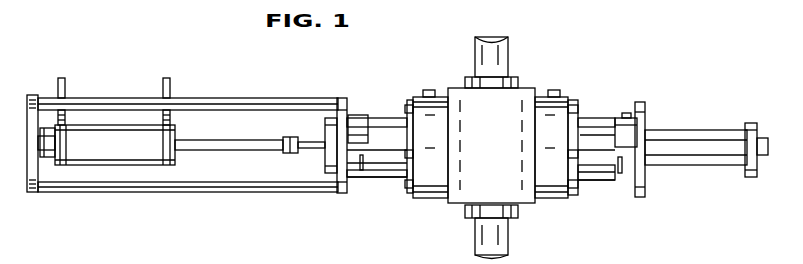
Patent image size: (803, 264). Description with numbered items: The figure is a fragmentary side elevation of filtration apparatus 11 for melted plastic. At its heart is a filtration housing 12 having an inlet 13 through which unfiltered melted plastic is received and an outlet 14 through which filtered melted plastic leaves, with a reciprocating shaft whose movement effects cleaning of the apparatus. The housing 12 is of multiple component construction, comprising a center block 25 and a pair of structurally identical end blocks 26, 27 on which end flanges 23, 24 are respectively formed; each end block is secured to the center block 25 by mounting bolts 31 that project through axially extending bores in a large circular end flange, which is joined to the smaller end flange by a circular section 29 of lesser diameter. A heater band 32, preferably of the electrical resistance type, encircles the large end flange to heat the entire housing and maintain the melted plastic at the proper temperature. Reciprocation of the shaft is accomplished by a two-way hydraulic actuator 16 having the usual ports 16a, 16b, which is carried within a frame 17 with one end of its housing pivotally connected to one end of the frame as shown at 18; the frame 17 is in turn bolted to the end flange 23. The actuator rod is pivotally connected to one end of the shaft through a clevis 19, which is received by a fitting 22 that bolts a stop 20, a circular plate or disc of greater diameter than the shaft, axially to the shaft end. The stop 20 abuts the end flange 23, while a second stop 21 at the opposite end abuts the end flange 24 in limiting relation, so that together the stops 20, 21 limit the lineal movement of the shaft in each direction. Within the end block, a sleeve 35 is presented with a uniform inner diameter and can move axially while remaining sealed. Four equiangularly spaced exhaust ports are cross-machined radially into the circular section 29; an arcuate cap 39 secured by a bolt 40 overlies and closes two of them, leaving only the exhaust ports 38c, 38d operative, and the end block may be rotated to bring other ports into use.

The apparatus 11 is at (624, 56).
The filtration housing 12 is at (537, 86).
The inlet 13 is at (475, 241).
The outlet 14 is at (505, 45).
The two-way hydraulic actuator 16 is at (103, 166).
The port 16a is at (63, 84).
The port 16b is at (170, 84).
The frame 17 is at (187, 193).
The pivotal connection 18 is at (50, 158).
The clevis 19 is at (295, 137).
The stop 20 is at (328, 174).
The stop 21 is at (749, 180).
The fitting 22 is at (297, 158).
The end flange 23 is at (344, 98).
The end flange 24 is at (646, 102).
The center block 25 is at (455, 95).
The end block 26 is at (385, 118).
The end block 27 is at (593, 118).
The circular section 29 is at (392, 178).
The mounting bolts 31 is at (408, 100).
The heater band 32 is at (430, 200).
The sleeve 35 is at (713, 130).
The exhaust port 38c is at (621, 175).
The exhaust port 38d is at (361, 172).
The arcuate cap 39 is at (363, 130).
The bolt 40 is at (628, 113).